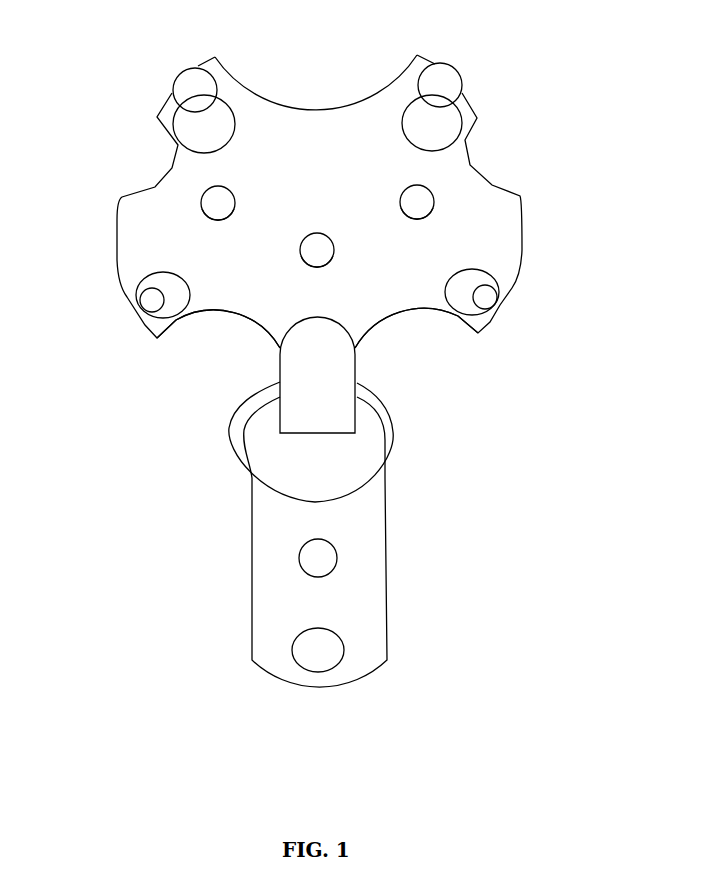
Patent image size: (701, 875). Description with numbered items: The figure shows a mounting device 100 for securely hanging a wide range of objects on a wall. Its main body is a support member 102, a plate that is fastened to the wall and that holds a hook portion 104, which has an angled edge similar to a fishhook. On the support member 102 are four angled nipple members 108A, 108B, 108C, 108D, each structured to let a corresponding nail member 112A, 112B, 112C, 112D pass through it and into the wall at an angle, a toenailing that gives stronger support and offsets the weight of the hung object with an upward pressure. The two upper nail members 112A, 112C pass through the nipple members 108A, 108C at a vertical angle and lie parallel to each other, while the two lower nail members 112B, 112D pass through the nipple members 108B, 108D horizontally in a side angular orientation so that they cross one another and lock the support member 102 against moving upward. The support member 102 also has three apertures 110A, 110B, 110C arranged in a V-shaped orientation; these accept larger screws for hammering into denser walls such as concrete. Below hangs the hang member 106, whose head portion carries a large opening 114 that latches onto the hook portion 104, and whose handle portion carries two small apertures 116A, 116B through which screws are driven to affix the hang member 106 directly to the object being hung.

The mounting device 100 is at (436, 686).
The support member 102 is at (160, 245).
The hook portion 104 is at (305, 403).
The hang member 106 is at (278, 585).
The nipple member 108A is at (210, 135).
The nipple member 108B is at (182, 300).
The nipple member 108C is at (425, 130).
The nipple member 108D is at (458, 303).
The aperture 110A is at (218, 198).
The aperture 110B is at (437, 202).
The aperture 110C is at (330, 250).
The nail member 112A is at (203, 88).
The nail member 112B is at (150, 300).
The nail member 112C is at (447, 88).
The nail member 112D is at (487, 297).
The large opening 114 is at (360, 492).
The small aperture 116A is at (318, 558).
The small aperture 116B is at (318, 650).